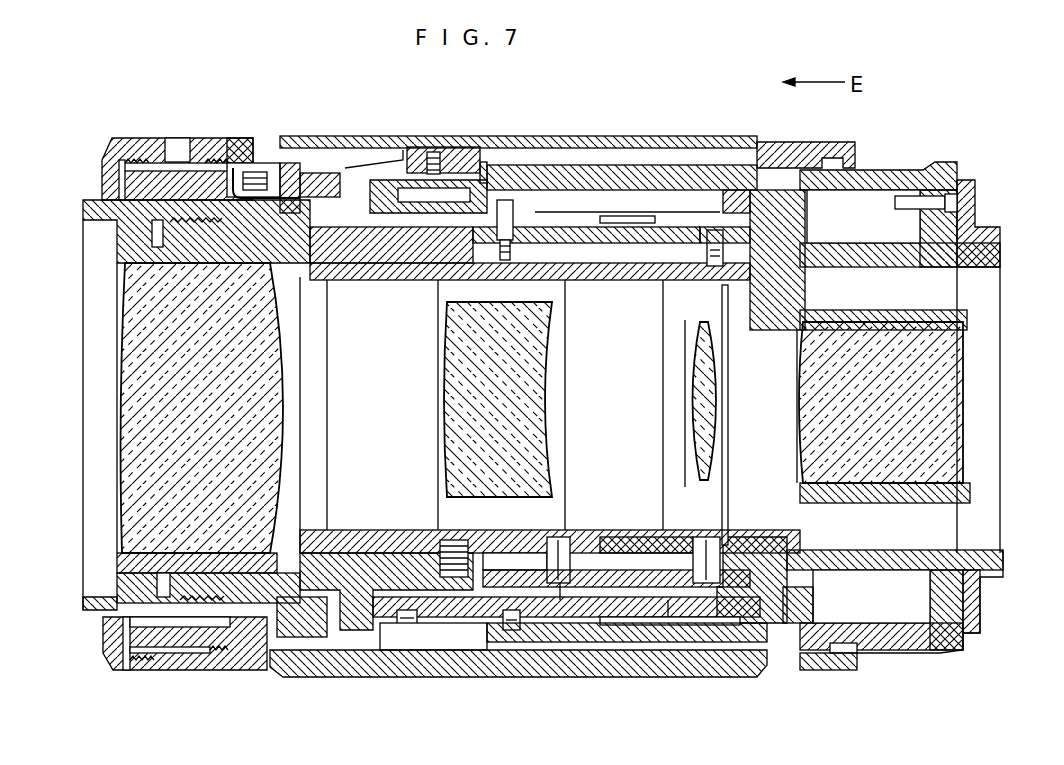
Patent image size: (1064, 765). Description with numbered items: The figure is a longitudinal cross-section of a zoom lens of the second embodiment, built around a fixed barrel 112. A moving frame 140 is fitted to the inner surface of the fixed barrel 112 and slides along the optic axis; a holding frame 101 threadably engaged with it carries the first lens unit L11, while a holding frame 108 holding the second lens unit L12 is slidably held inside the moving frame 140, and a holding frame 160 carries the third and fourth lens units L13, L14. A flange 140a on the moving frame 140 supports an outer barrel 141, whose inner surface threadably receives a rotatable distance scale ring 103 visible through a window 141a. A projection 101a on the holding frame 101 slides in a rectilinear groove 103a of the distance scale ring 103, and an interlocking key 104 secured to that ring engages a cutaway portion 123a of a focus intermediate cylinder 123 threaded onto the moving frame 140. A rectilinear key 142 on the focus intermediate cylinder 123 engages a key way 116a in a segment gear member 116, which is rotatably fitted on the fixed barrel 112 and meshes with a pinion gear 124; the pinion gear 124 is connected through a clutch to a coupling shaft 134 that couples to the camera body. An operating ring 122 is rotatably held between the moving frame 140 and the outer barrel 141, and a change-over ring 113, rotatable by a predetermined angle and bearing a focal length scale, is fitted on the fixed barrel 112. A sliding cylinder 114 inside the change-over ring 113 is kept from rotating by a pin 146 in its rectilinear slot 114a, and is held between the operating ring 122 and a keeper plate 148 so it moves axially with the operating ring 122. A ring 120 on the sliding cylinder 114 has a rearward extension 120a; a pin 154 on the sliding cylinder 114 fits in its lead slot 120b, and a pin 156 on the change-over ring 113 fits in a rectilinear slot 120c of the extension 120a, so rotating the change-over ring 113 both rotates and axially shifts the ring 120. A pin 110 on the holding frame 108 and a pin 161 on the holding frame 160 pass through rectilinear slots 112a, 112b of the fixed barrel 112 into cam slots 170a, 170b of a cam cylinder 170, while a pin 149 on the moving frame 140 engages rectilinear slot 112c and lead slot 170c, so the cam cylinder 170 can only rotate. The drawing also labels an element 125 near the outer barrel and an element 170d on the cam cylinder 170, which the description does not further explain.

The holding frame 101 is at (120, 243).
The projection 101a is at (213, 627).
The distance scale ring 103 is at (133, 187).
The rectilinear groove 103a is at (168, 627).
The interlocking key 104 is at (300, 175).
The holding frame 108 is at (362, 530).
The pin 110 is at (562, 560).
The fixed barrel 112 is at (852, 262).
The rectilinear slot 112a is at (522, 558).
The rectilinear slot 112b is at (655, 557).
The rectilinear slot 112c is at (598, 280).
The change-over ring 113 is at (885, 172).
The sliding cylinder 114 is at (750, 148).
The rectilinear slot 114a is at (582, 148).
The segment gear member 116 is at (358, 583).
The key way 116a is at (387, 228).
The ring 120 is at (437, 633).
The extension 120a is at (478, 620).
The lead slot 120b is at (407, 628).
The rectilinear slot 120c is at (618, 617).
The operating ring 122 is at (812, 142).
The focus intermediate cylinder 123 is at (310, 630).
The cutaway portion 123a is at (283, 213).
The pinion gear 124 is at (437, 538).
The lever 125 is at (360, 165).
The coupling shaft 134 is at (930, 200).
The moving frame 140 is at (605, 262).
The flange 140a is at (275, 165).
The outer barrel 141 is at (234, 148).
The window 141a is at (178, 138).
The rectilinear key 142 is at (630, 217).
The pin 146 is at (512, 150).
The keeper plate 148 is at (467, 147).
The pin 149 is at (740, 203).
The pin 154 is at (405, 627).
The pin 156 is at (520, 630).
The holding frame 160 is at (860, 500).
The pin 161 is at (727, 560).
The cam cylinder 170 is at (668, 590).
The cam slot 170a is at (560, 585).
The cam slot 170b is at (707, 583).
The lead slot 170c is at (716, 237).
The guide screw 170d is at (508, 215).
The first lens unit L11 is at (130, 415).
The second lens unit L12 is at (460, 403).
The third lens unit L13 is at (692, 400).
The fourth lens unit L14 is at (975, 390).